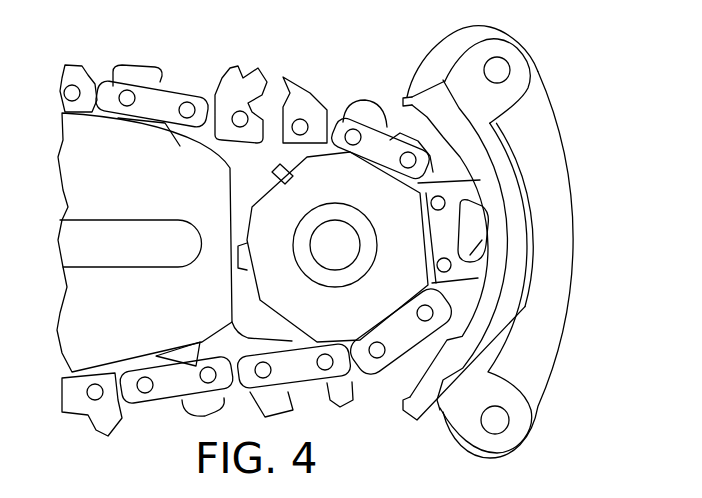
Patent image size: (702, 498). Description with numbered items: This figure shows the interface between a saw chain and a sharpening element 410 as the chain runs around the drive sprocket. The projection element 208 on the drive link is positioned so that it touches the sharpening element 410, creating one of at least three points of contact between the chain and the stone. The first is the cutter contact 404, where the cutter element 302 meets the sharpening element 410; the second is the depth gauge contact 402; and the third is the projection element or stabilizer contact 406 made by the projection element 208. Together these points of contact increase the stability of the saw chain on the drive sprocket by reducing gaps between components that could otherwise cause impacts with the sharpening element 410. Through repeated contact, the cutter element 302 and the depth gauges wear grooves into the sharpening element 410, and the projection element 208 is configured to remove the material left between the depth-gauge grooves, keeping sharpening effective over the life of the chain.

The projection element 208 is at (447, 323).
The cutter element 302 is at (490, 262).
The depth gauge contact 402 is at (495, 190).
The cutter contact 404 is at (490, 244).
The projection element or stabilizer contact 406 is at (457, 343).
The sharpening element 410 is at (403, 100).